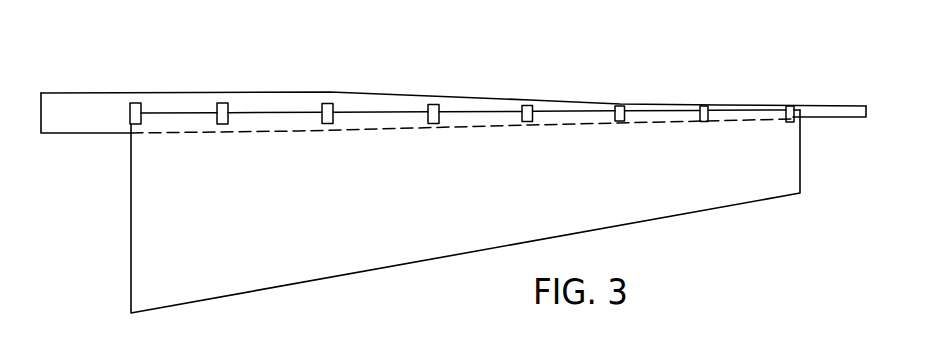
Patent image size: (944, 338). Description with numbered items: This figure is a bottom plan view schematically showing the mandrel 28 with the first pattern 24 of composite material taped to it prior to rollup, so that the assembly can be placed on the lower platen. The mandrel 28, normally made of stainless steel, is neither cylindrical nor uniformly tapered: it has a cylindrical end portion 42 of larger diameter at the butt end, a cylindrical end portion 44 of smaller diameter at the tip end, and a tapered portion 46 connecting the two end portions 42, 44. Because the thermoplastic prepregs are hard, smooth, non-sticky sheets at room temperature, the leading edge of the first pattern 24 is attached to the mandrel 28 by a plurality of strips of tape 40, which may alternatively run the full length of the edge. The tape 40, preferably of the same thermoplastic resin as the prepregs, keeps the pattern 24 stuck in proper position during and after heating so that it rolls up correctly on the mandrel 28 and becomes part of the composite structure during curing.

The first pattern 24 is at (772, 188).
The mandrel 28 is at (453, 118).
The strips of tape 40 is at (433, 107).
The cylindrical end portion 42 is at (73, 128).
The cylindrical end portion 44 is at (838, 112).
The tapered portion 46 is at (347, 98).